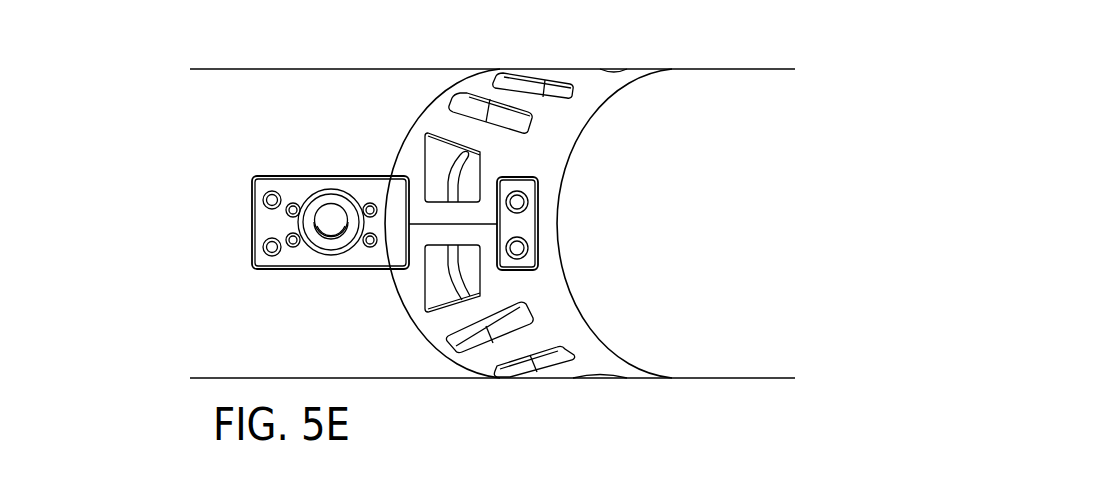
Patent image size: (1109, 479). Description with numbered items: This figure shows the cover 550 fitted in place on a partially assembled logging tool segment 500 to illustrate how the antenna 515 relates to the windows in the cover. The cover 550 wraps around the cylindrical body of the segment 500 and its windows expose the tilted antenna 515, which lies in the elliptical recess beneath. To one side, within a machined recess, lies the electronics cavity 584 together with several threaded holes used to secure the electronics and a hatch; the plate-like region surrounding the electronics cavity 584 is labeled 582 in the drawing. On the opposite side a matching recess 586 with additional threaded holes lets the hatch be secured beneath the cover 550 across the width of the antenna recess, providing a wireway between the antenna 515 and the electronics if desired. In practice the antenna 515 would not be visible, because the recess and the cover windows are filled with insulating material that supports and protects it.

The segment 500 is at (278, 69).
The antenna 515 is at (457, 163).
The cover 550 is at (468, 375).
The mounting plate 582 is at (322, 270).
The electronics cavity 584 is at (330, 210).
The matching recess 586 is at (538, 240).